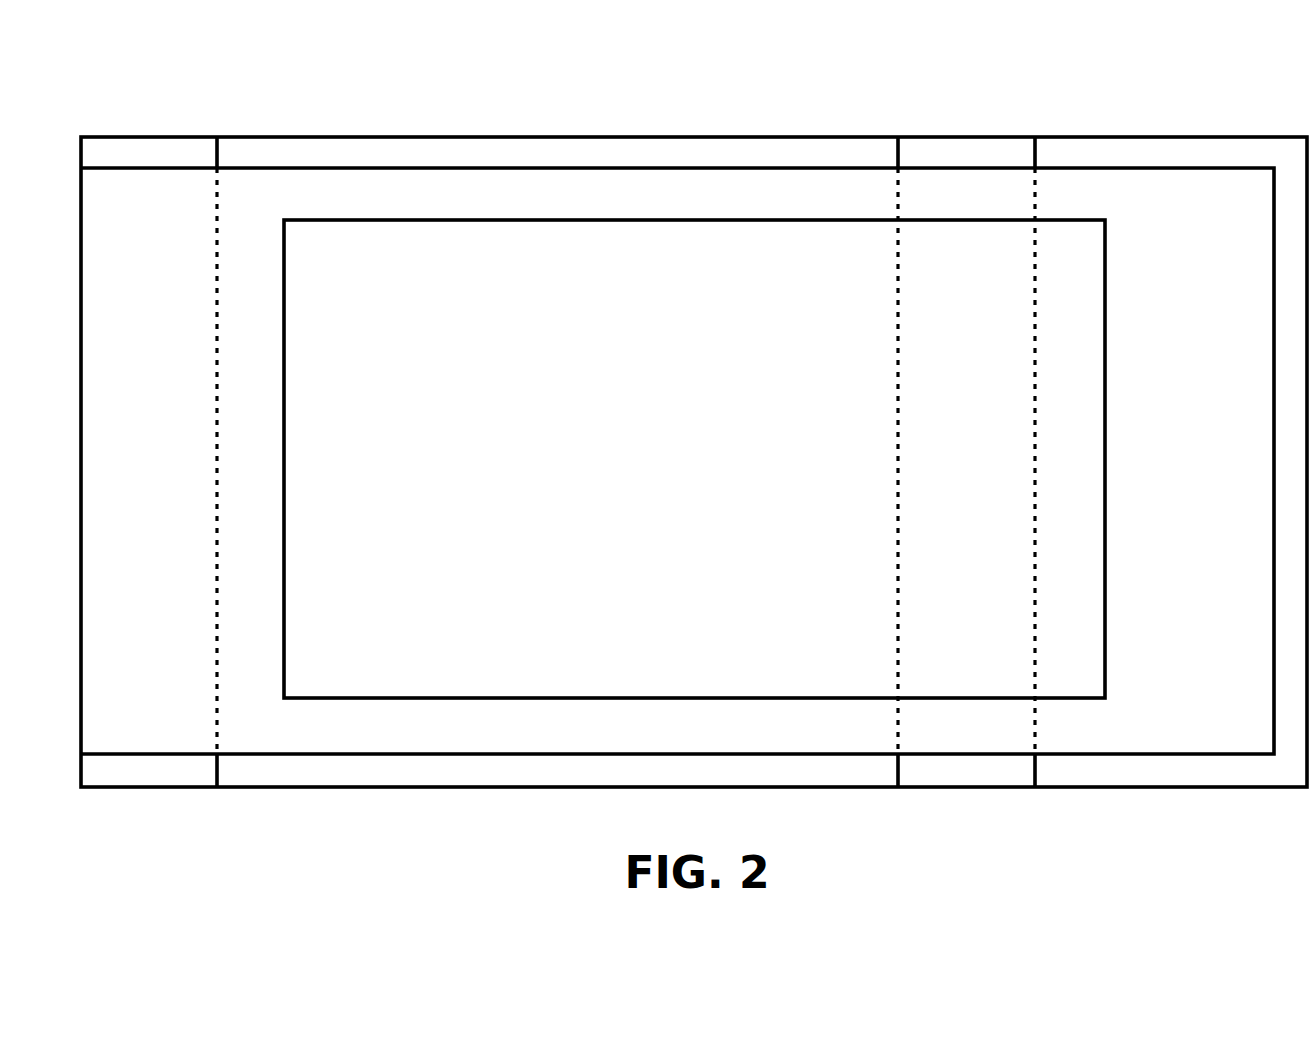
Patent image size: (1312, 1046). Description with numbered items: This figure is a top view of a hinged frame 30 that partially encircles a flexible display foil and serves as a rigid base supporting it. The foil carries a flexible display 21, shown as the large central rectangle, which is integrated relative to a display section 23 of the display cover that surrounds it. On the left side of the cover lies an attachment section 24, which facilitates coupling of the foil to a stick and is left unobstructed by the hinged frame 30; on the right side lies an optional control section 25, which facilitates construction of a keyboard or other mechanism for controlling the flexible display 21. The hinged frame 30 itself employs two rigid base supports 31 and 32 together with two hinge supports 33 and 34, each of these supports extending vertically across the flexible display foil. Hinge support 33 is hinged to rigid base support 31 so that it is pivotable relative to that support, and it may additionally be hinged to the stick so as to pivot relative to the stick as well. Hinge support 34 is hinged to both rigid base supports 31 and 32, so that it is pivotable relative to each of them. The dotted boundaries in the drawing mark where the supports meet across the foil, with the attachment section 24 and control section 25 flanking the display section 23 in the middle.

The hinged frame 30 is at (472, 104).
The flexible display 21 is at (683, 470).
The display section 23 is at (683, 194).
The attachment section 24 is at (173, 470).
The control section 25 is at (1195, 466).
The rigid base support 31 is at (547, 162).
The rigid base support 32 is at (1280, 466).
The hinge support 33 is at (139, 162).
The hinge support 34 is at (954, 158).